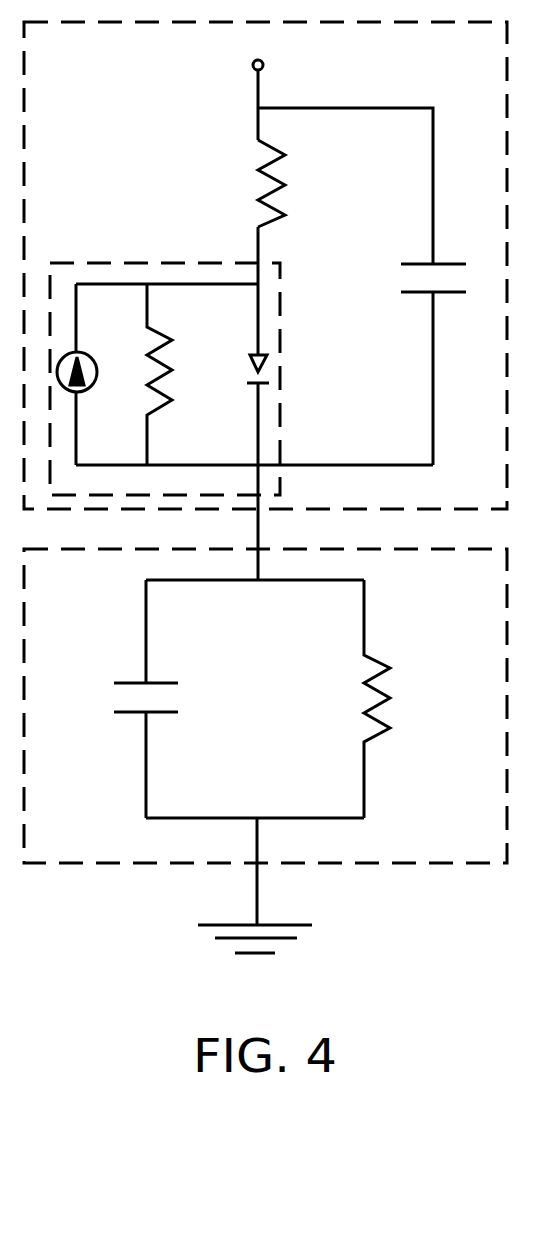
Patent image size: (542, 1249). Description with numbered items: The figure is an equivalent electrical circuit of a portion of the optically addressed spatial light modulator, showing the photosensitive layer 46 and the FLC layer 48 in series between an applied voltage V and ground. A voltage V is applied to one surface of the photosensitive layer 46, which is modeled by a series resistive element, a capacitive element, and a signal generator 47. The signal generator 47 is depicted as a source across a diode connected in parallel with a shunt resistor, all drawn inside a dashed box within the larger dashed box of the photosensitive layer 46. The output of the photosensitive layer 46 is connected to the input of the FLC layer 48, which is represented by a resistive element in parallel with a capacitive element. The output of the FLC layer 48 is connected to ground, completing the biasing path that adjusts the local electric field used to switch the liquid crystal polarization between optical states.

The photosensitive layer 46 is at (265, 299).
The signal generator 47 is at (165, 358).
The FLC layer 48 is at (265, 751).